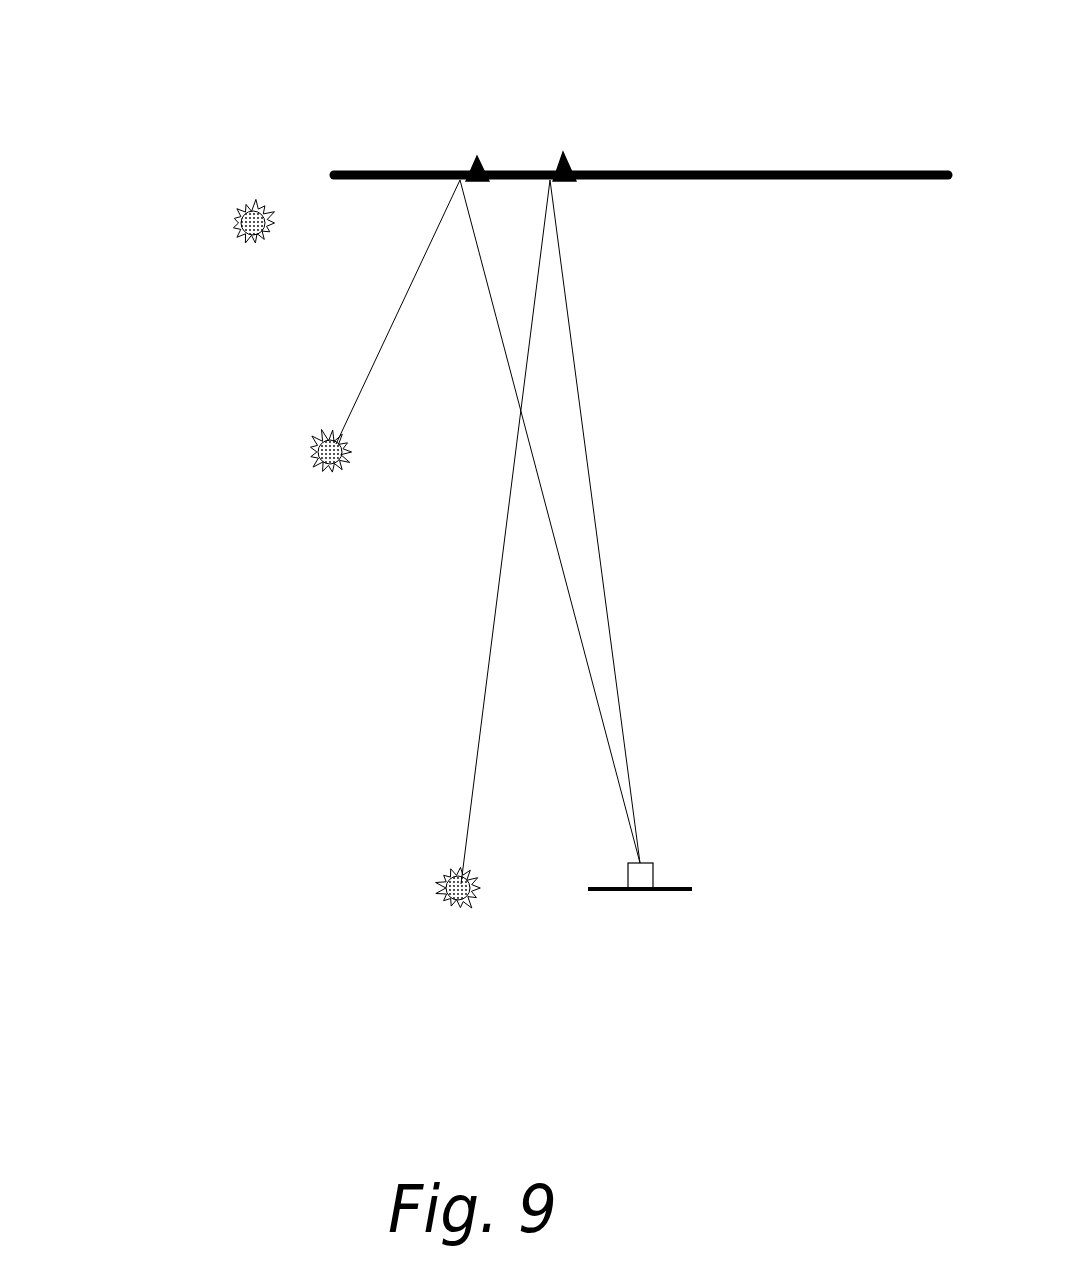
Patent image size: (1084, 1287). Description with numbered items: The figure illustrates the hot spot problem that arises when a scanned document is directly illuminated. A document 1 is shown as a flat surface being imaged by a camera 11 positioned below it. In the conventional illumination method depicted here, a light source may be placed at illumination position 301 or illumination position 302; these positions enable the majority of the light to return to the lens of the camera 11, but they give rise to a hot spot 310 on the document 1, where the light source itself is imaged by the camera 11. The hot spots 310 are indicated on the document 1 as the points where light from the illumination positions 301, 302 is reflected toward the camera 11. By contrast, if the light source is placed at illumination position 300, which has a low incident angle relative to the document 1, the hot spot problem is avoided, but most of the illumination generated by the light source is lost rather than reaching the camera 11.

The document 1 is at (373, 172).
The hot spot 310 is at (484, 163).
The illumination position 300 is at (243, 231).
The illumination position 301 is at (310, 451).
The illumination position 302 is at (440, 888).
The camera 11 is at (650, 875).